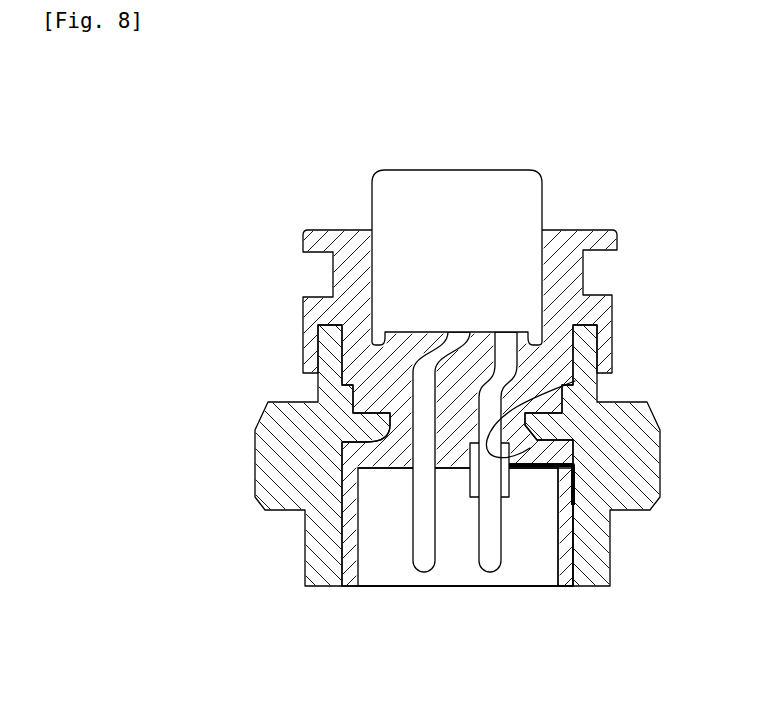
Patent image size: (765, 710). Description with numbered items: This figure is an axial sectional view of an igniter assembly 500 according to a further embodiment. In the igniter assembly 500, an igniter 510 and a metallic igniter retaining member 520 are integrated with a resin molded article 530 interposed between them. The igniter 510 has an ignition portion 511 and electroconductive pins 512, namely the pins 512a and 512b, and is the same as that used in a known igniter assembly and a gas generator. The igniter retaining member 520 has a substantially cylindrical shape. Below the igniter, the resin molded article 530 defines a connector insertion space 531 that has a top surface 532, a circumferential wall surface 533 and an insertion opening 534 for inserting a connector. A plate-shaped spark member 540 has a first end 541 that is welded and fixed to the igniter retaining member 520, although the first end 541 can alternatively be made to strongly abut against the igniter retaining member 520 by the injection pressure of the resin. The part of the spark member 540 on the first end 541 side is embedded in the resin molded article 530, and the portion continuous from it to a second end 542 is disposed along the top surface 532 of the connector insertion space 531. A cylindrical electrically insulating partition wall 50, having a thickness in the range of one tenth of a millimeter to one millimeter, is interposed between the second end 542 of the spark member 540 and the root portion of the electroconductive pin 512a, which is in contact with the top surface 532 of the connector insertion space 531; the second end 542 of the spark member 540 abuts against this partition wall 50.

The igniter assembly 500 is at (549, 162).
The igniter 510 is at (450, 224).
The ignition portion 511 is at (480, 294).
The electroconductive pins 512 is at (469, 508).
The electroconductive pin 512a is at (487, 574).
The electroconductive pin 512b is at (418, 574).
The igniter retaining member 520 is at (657, 413).
The resin molded article 530 is at (601, 232).
The connector insertion space 531 is at (403, 571).
The top surface 532 is at (380, 469).
The circumferential wall surface 533 is at (563, 537).
The insertion opening 534 is at (370, 588).
The spark member 540 is at (538, 468).
The first end 541 is at (577, 515).
The second end 542 is at (575, 381).
The cylindrical electrically insulating partition wall 50 is at (469, 498).